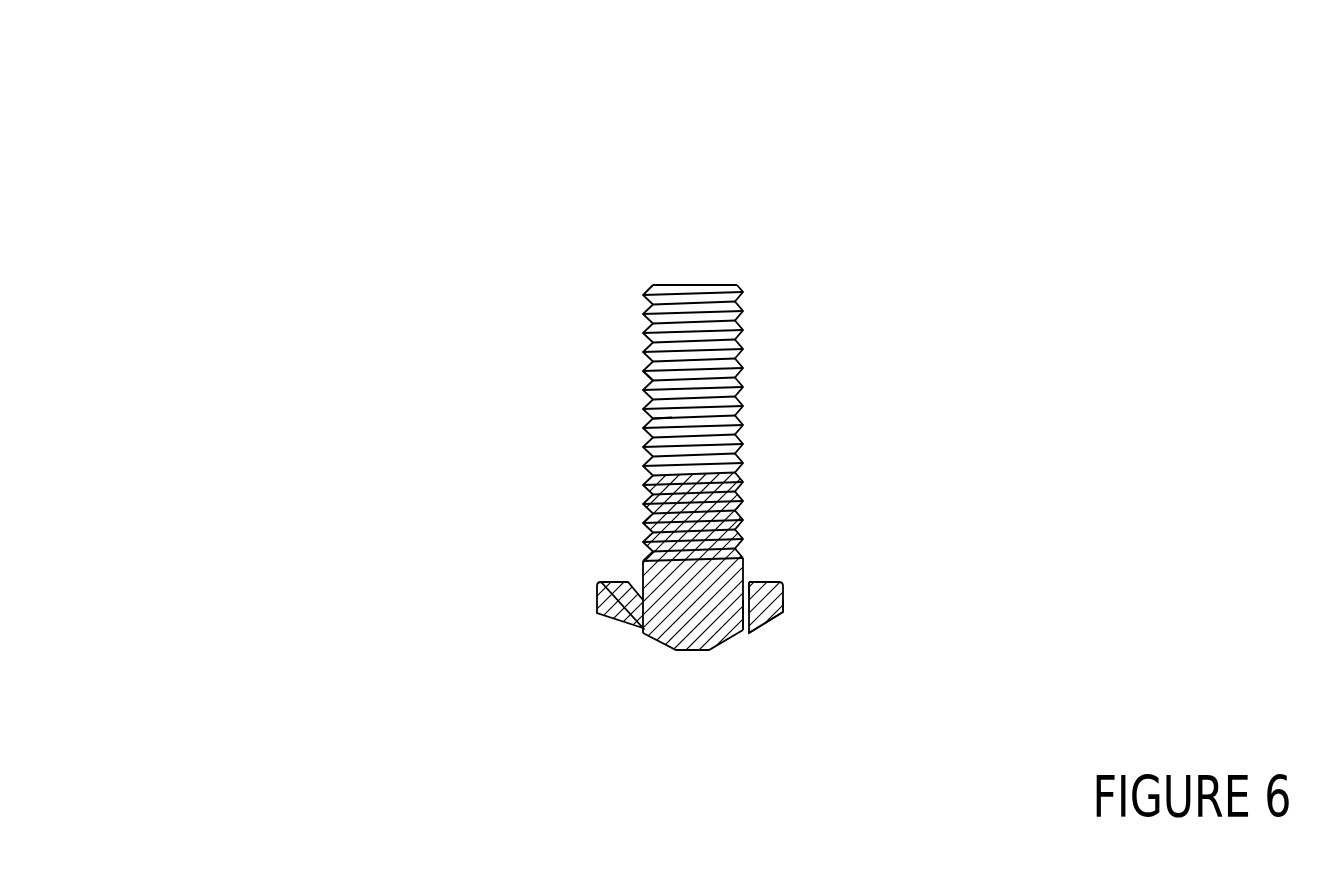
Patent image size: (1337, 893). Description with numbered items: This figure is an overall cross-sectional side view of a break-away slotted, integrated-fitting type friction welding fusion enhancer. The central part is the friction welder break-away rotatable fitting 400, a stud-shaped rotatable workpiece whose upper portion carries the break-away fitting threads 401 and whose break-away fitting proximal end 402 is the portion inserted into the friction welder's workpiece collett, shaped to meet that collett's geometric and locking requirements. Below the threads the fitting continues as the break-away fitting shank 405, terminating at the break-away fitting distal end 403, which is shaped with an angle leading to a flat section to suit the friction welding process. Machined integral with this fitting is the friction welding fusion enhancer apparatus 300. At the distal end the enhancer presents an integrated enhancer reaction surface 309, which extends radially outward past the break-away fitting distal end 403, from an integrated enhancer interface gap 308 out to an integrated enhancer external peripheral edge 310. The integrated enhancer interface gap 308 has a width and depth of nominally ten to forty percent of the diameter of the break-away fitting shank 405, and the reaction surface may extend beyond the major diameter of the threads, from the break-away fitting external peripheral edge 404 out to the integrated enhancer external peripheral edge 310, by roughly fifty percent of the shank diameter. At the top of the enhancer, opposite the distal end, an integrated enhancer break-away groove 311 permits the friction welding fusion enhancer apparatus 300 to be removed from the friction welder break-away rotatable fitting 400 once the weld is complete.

The break-away fitting proximal end 402 is at (693, 290).
The friction welder break-away rotatable fitting 400 is at (643, 375).
The break-away fitting threads 401 is at (672, 422).
The break-away fitting shank 405 is at (687, 514).
The break-away fitting external peripheral edge 404 is at (642, 570).
The break-away fitting distal end 403 is at (692, 650).
The friction welding fusion enhancer apparatus 300 is at (777, 592).
The integrated enhancer break-away groove 311 is at (749, 583).
The integrated enhancer external peripheral edge 310 is at (790, 613).
The integrated enhancer reaction surface 309 is at (762, 623).
The integrated enhancer interface gap 308 is at (743, 630).